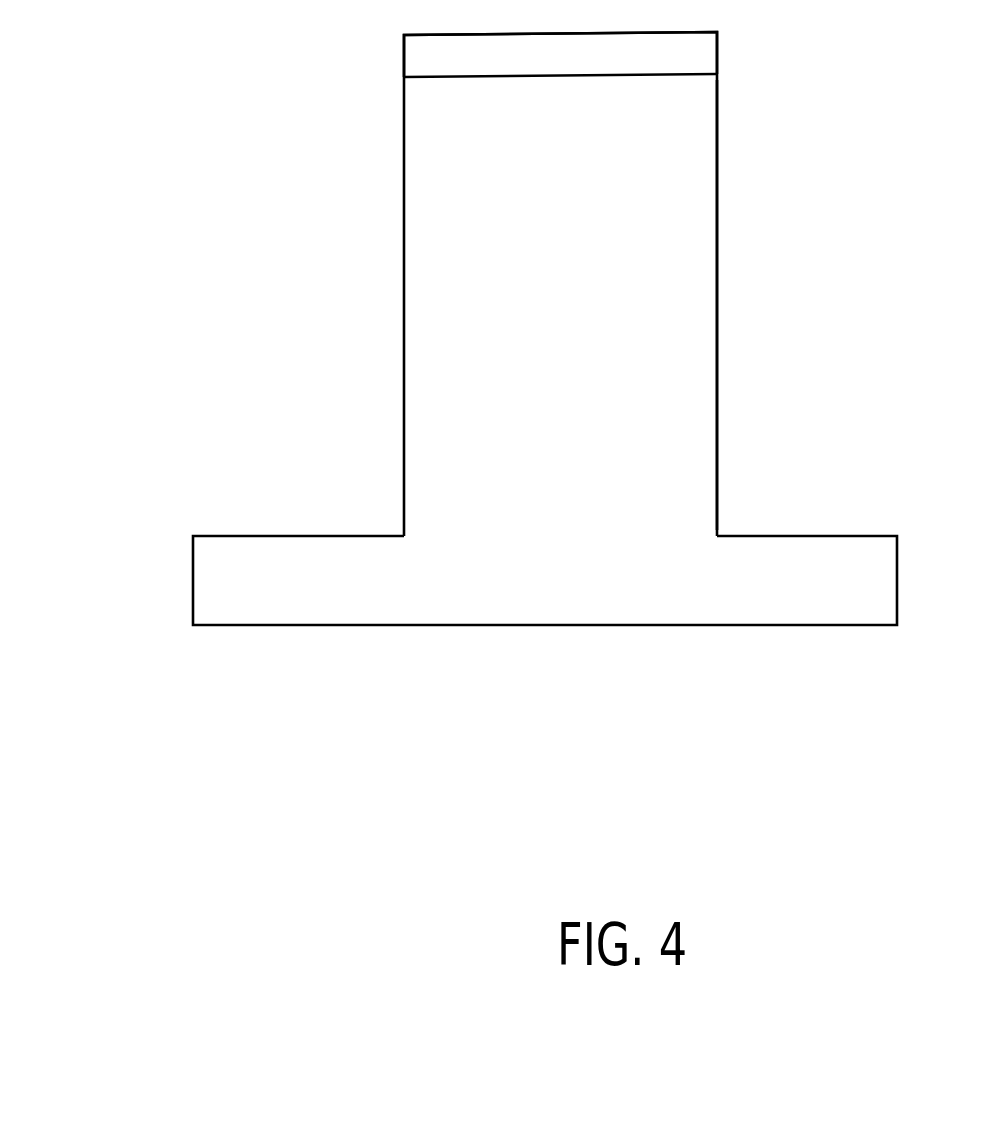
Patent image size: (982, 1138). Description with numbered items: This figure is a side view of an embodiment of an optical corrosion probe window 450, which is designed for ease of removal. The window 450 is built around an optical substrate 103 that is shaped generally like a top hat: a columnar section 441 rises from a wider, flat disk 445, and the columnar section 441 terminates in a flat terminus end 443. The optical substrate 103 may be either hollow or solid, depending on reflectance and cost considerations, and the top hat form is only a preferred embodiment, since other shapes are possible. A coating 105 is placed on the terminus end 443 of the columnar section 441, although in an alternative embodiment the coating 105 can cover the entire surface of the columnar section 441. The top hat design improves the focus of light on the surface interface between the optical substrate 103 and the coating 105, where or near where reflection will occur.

The window 450 is at (126, 76).
The optical substrate 103 is at (717, 424).
The columnar section 441 is at (717, 291).
The disk 445 is at (543, 626).
The coating 105 is at (402, 53).
The terminus end 443 is at (650, 74).